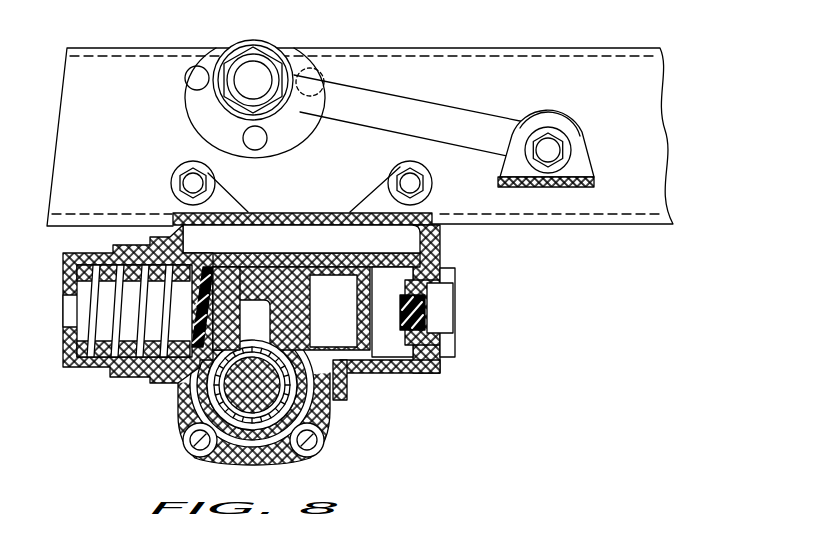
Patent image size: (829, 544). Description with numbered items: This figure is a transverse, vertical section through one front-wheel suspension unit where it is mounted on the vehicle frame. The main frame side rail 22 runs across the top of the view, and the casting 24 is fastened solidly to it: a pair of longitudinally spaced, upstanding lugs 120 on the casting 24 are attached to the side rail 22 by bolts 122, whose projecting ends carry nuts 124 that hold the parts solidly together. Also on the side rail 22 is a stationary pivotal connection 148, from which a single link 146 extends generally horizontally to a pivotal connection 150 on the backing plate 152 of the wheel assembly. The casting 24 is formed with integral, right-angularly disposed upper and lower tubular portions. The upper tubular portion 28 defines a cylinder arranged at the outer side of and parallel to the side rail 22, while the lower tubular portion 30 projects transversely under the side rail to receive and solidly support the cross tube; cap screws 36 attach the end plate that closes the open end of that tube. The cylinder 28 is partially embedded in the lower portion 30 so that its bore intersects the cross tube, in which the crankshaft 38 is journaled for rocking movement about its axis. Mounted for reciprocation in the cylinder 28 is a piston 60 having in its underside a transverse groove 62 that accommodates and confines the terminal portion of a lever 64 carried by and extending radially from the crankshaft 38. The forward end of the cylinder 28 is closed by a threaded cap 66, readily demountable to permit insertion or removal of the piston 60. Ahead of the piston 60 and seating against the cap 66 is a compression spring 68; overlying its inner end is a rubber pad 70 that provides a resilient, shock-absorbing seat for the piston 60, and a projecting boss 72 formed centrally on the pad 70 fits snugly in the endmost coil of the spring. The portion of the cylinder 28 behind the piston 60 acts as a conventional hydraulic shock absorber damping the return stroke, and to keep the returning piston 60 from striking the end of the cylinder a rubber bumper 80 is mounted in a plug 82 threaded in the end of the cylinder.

The main frame side rail 22 is at (385, 50).
The stationary pivotal connection 148 is at (253, 75).
The single link 146 is at (427, 110).
The pivotal connection 150 is at (563, 115).
The backing plate 152 is at (580, 165).
The upstanding lugs 120 is at (173, 210).
The casting 24 is at (288, 204).
The bolts 122 is at (200, 177).
The nuts 124 is at (183, 167).
The lower tubular portion 30 is at (180, 405).
The cap screws 36 is at (190, 442).
The upper tubular portion 28 is at (317, 253).
The threaded cap 66 is at (75, 368).
The compression spring 68 is at (118, 362).
The piston 60 is at (253, 280).
The transverse groove 62 is at (293, 297).
The lever 64 is at (260, 317).
The crankshaft 38 is at (267, 385).
The projecting boss 72 is at (205, 267).
The rubber pad 70 is at (213, 273).
The plug 82 is at (453, 288).
The rubber bumper 80 is at (403, 302).